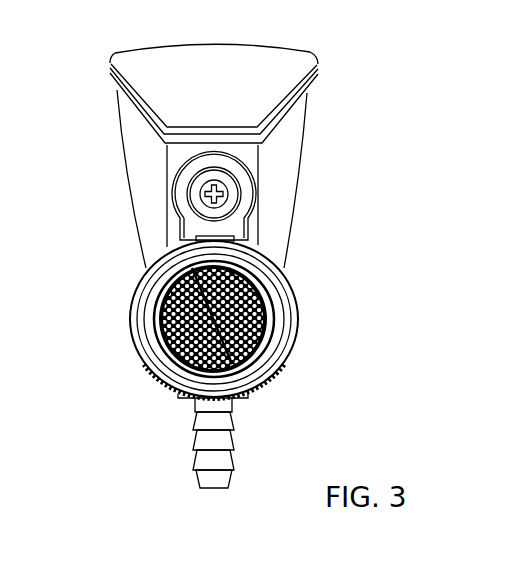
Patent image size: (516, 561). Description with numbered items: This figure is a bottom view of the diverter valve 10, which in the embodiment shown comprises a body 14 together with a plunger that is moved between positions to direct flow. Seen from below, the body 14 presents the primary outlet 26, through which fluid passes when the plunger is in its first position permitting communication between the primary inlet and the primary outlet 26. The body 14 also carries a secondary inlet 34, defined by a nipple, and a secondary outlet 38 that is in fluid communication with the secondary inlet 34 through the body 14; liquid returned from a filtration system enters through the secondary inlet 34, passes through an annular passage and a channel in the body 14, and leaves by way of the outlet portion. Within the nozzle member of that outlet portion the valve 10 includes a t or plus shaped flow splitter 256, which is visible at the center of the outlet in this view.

The diverter valve 10 is at (357, 105).
The body 14 is at (278, 376).
The primary outlet 26 is at (278, 311).
The secondary inlet 34 is at (212, 490).
The secondary outlet 38 is at (238, 192).
The flow splitter 256 is at (204, 194).